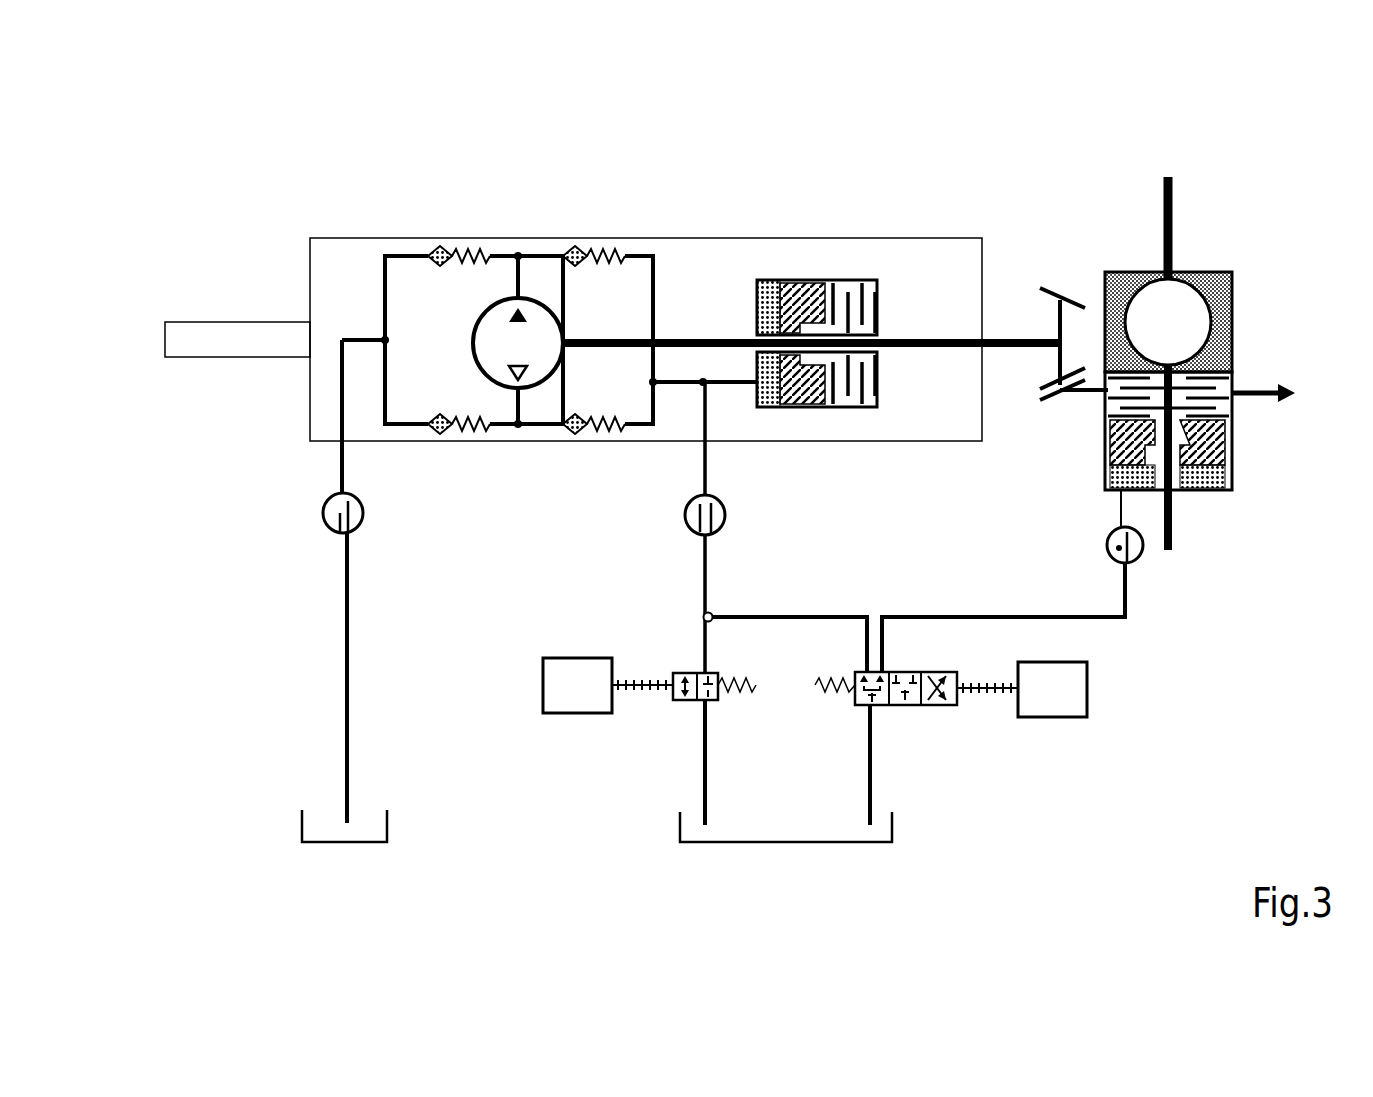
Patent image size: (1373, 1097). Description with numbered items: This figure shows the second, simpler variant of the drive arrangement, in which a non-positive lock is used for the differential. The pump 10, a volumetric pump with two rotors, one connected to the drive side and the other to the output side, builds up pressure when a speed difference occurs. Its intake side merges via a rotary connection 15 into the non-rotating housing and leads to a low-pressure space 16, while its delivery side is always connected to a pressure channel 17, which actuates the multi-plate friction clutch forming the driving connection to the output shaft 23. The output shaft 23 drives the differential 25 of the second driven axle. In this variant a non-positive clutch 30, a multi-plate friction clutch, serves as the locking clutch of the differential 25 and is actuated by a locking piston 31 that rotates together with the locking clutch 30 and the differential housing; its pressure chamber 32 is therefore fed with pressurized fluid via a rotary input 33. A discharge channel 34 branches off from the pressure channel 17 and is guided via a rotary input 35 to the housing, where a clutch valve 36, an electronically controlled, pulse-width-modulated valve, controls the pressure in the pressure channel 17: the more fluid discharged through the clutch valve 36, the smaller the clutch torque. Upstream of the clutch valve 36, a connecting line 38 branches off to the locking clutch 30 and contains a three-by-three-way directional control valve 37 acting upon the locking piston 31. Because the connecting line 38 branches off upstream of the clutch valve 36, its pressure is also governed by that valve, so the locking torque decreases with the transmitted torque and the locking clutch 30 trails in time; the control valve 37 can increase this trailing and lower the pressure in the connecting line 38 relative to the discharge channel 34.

The pump 10 is at (507, 335).
The rotary connection 15 is at (331, 512).
The low-pressure space 16 is at (330, 825).
The pressure channel 17 is at (730, 378).
The output shaft 23 is at (915, 338).
The differential 25 is at (1200, 318).
The non-positive clutch 30 is at (1255, 421).
The locking piston 31 is at (1212, 450).
The pressure chamber 32 is at (1228, 488).
The rotary input 33 is at (1135, 555).
The discharge channel 34 is at (707, 560).
The rotary input 35 is at (693, 515).
The clutch valve 36 is at (683, 702).
The control valve 37 is at (937, 705).
The connecting line 38 is at (1075, 620).